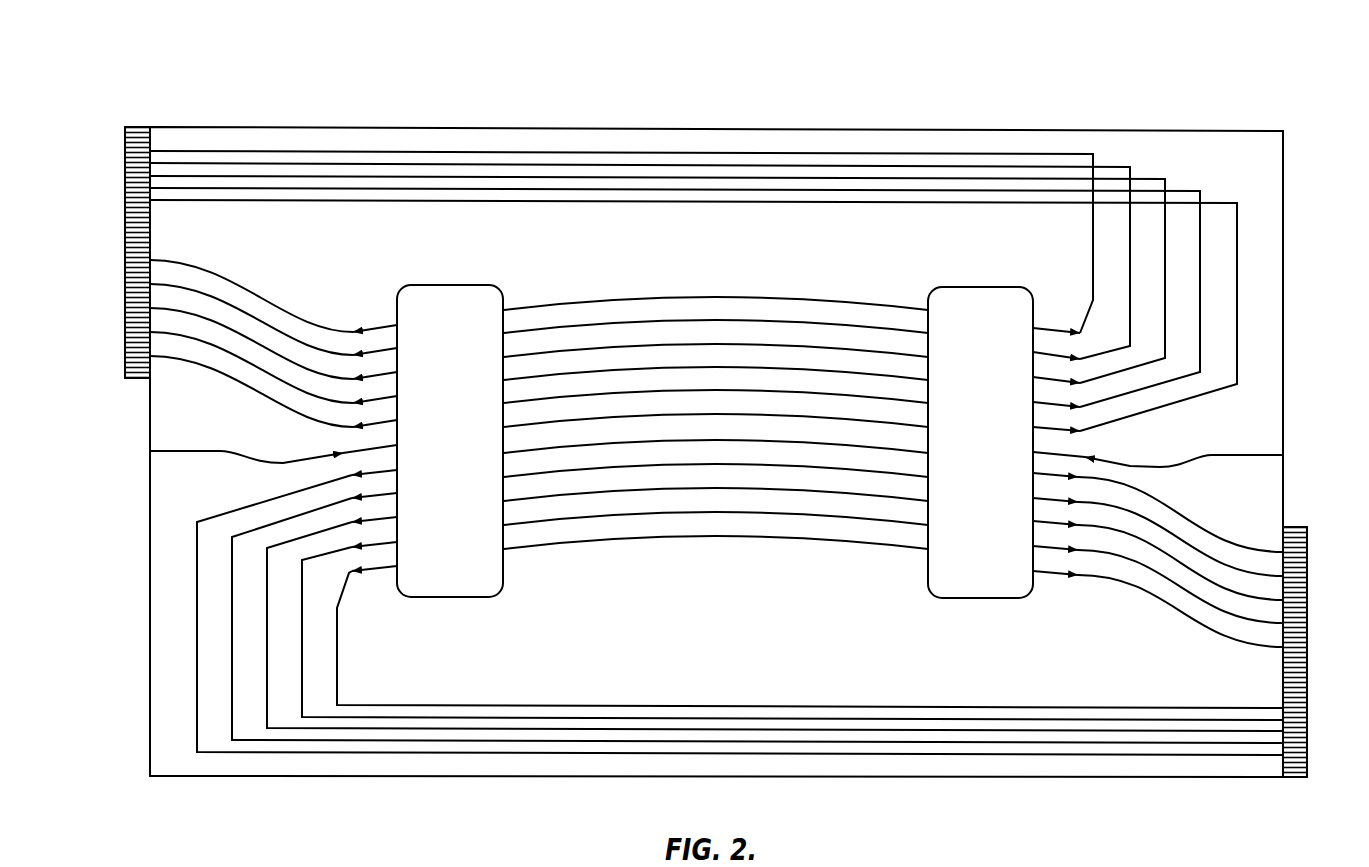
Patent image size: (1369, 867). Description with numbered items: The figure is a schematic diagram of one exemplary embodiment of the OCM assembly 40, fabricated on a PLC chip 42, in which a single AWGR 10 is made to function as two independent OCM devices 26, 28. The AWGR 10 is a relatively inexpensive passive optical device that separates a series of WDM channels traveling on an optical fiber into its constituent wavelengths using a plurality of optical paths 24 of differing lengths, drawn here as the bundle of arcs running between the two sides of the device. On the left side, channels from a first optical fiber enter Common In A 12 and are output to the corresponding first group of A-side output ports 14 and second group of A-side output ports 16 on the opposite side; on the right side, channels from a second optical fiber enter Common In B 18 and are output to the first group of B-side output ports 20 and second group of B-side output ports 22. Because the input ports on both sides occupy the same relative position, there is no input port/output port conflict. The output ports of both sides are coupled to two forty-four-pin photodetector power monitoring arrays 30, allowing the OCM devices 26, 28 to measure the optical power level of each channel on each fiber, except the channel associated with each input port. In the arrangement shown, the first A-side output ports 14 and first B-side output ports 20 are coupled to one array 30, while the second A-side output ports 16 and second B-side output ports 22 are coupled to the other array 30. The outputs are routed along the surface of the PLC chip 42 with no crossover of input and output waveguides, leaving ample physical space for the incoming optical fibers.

The AWGR 10 is at (910, 297).
The Common In A 12 is at (206, 492).
The Channels 1 (A)-18 (A) 14 is at (993, 379).
The Channels 20 (A)-44 (A) 16 is at (993, 531).
The Common In B 18 is at (1253, 497).
The Channels 1 (B)-18 (B) 20 is at (463, 376).
The Channels 20 (B)-44 (B) 22 is at (463, 529).
The optical paths 24 is at (727, 579).
The OCM device 26 is at (973, 305).
The OCM device 28 is at (442, 302).
The 44-PIN photodetector power monitoring array 30 is at (139, 419).
The OCM assembly 40 is at (1053, 118).
The PLC chip 42 is at (1172, 130).